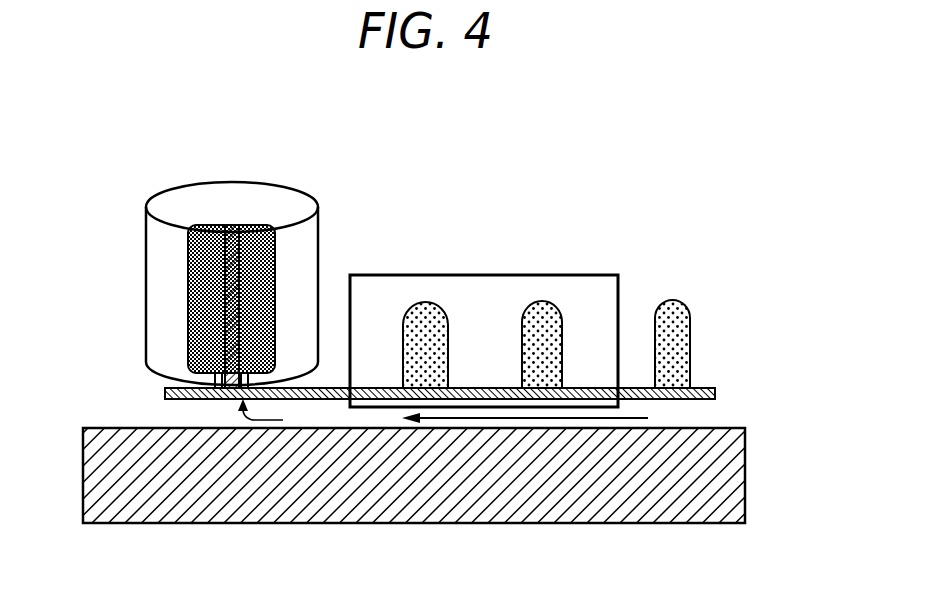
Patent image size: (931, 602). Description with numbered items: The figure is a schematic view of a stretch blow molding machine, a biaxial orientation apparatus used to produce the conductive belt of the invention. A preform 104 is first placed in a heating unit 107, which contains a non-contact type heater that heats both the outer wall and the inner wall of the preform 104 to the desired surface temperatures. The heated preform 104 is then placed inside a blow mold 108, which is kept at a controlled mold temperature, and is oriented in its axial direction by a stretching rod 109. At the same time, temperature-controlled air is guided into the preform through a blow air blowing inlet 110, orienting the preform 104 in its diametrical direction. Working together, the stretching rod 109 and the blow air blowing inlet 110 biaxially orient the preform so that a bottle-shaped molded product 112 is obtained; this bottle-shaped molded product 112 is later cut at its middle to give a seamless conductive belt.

The preform 104 is at (688, 322).
The heating unit 107 is at (470, 290).
The blow mold 108 is at (297, 203).
The stretching rod 109 is at (190, 253).
The blow air blowing inlet 110 is at (268, 421).
The bottle-shaped molded product 112 is at (190, 330).